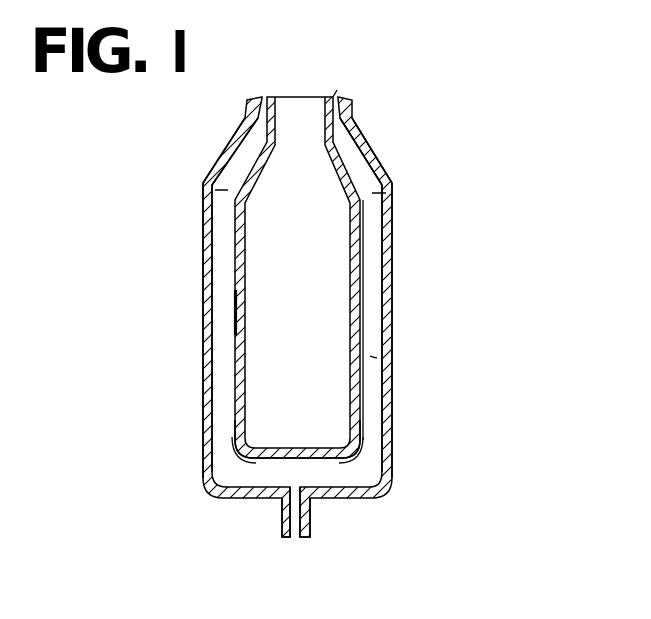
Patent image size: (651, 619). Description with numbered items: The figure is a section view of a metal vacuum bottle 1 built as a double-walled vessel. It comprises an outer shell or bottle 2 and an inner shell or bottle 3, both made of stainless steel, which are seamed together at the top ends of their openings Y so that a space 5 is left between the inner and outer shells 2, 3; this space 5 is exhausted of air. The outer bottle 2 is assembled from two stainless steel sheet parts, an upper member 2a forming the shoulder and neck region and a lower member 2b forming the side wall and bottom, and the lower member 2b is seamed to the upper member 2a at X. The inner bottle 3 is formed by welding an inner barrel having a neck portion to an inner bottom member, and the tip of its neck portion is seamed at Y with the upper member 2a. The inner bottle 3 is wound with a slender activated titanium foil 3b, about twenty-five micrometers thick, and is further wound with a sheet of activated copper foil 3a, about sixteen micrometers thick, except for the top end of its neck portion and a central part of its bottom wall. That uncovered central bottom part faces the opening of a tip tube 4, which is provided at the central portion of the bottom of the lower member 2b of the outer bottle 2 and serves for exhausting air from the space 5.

The metal vacuum bottle 1 is at (380, 157).
The outer shell or bottle 2 is at (393, 267).
The upper member 2a is at (228, 145).
The lower member 2b is at (203, 341).
The inner shell or bottle 3 is at (229, 273).
The activated copper foil 3a is at (228, 405).
The activated titanium foil 3b is at (232, 308).
The tip tube 4 is at (280, 520).
The space 5 is at (370, 356).
The seam between upper and lower members X is at (386, 193).
The top ends of openings / tip of neck portion Y is at (337, 90).